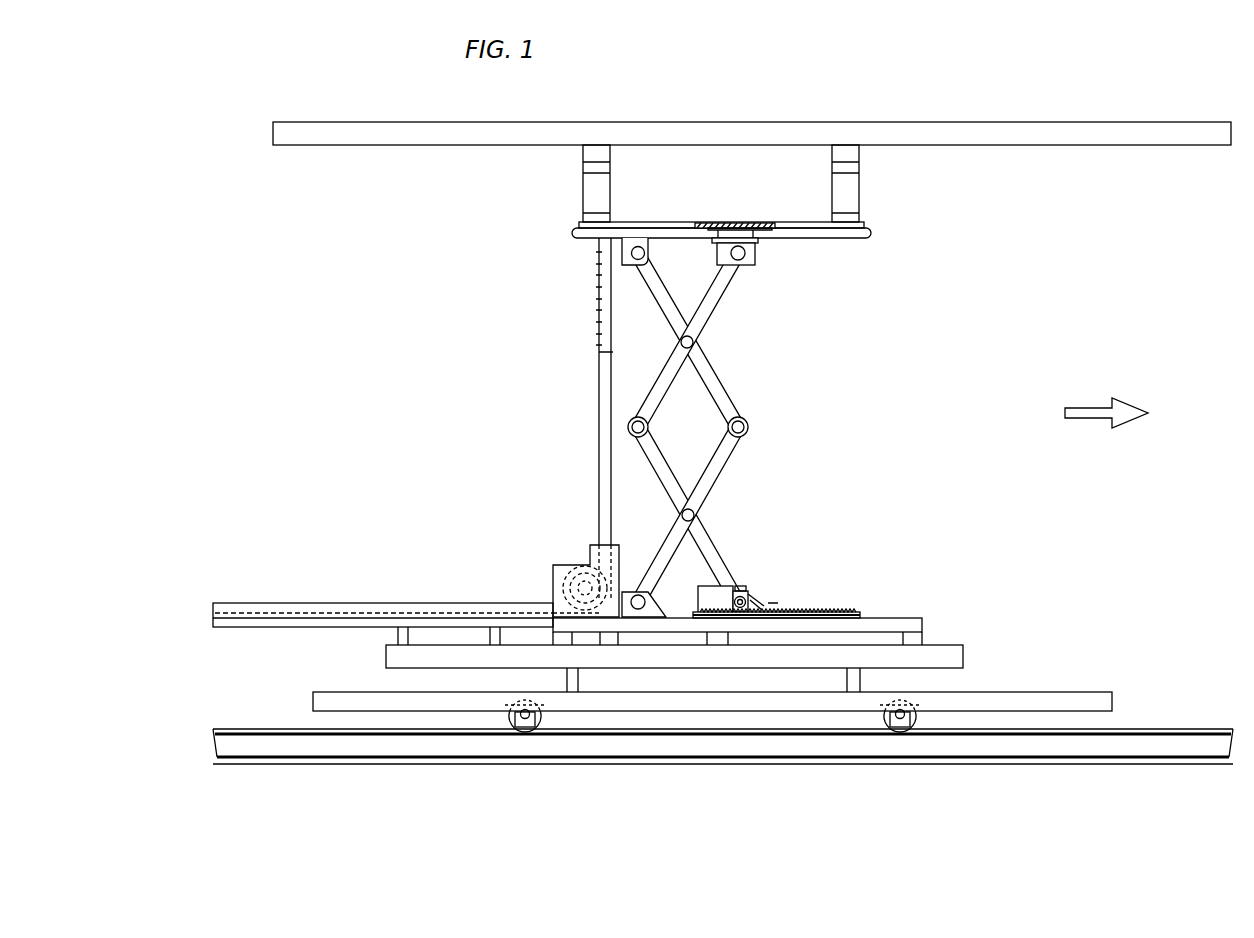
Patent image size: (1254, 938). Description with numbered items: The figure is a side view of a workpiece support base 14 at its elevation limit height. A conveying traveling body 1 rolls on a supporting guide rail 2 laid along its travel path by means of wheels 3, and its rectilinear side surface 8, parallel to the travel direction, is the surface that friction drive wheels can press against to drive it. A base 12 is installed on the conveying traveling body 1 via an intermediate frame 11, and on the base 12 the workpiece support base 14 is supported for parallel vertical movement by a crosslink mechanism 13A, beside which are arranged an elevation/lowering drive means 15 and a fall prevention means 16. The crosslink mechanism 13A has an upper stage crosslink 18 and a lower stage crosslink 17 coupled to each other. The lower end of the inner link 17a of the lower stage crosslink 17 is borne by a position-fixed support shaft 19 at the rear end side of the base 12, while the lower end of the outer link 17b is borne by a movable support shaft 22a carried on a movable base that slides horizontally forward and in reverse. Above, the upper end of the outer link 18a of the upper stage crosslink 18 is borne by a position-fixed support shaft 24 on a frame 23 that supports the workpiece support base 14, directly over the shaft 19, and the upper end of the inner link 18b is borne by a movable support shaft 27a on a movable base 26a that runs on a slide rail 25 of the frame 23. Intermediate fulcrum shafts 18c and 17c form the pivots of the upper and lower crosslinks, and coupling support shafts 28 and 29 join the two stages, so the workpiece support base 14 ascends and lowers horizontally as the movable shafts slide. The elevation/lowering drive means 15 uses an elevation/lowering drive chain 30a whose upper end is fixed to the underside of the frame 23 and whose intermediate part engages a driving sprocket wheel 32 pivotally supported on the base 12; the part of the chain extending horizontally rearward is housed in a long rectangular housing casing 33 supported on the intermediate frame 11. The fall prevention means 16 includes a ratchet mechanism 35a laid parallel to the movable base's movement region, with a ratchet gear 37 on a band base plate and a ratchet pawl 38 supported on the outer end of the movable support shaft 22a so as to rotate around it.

The conveying traveling body 1 is at (712, 715).
The supporting guide rail 2 is at (1140, 745).
The wheel 3 is at (525, 731).
The rectilinear side surface 8 is at (440, 703).
The intermediate frame 11 is at (712, 680).
The base 12 is at (903, 624).
The crosslink mechanism 13A is at (736, 372).
The workpiece support base 14 is at (738, 128).
The elevation/lowering drive means 15 is at (542, 577).
The fall prevention means 16 is at (746, 579).
The lower stage crosslink 17 is at (662, 514).
The inner link of lower stage crosslink 17a is at (725, 460).
The outer link of lower stage crosslink 17b is at (650, 456).
The intermediate fulcrum shaft 17c is at (687, 513).
The upper stage crosslink 18 is at (667, 339).
The outer link of upper stage crosslink 18a is at (725, 385).
The inner link of upper stage crosslink 18b is at (713, 300).
The intermediate fulcrum shaft 18c is at (695, 342).
The position-fixed support shaft 19 is at (638, 609).
The movable support shaft 22a is at (741, 608).
The frame 23 is at (668, 225).
The position-fixed support shaft 24 is at (638, 250).
The slide rail 25 is at (765, 222).
The movable base 26a is at (733, 238).
The movable support shaft 27a is at (760, 252).
The coupling support shaft 28 is at (748, 427).
The coupling support shaft 29 is at (648, 427).
The elevation/lowering drive chain 30a is at (600, 333).
The driving sprocket wheel 32 is at (563, 566).
The housing casing 33 is at (350, 603).
The ratchet mechanism 35a is at (814, 601).
The ratchet gear 37 is at (818, 613).
The ratchet pawl 38 is at (750, 598).